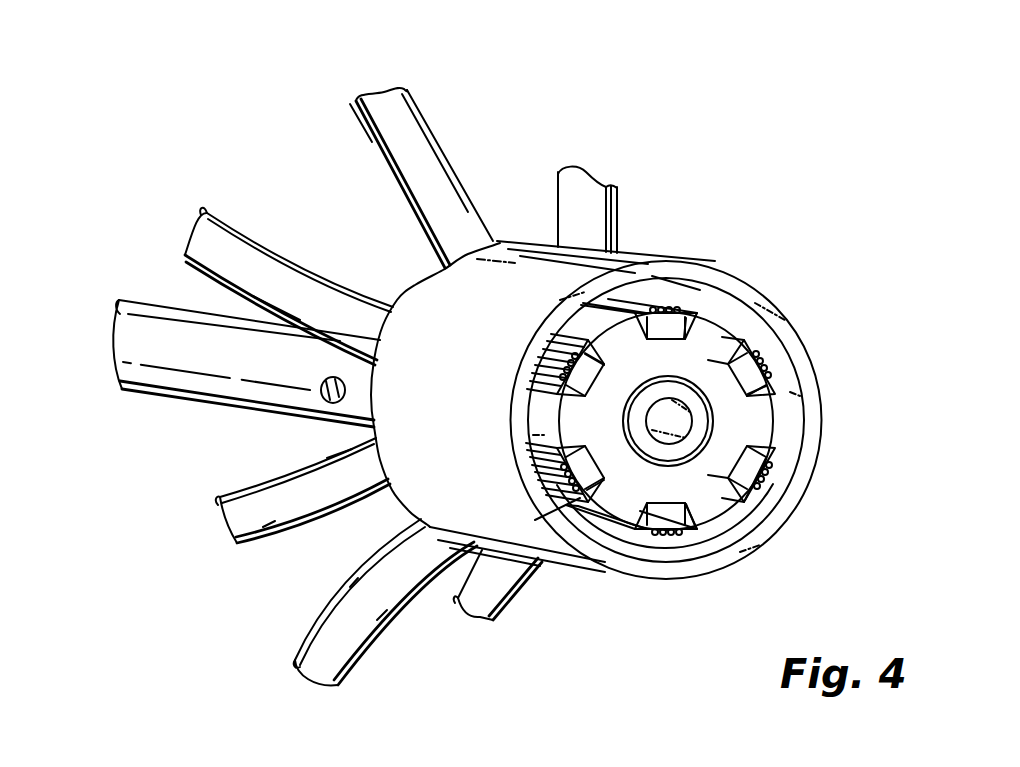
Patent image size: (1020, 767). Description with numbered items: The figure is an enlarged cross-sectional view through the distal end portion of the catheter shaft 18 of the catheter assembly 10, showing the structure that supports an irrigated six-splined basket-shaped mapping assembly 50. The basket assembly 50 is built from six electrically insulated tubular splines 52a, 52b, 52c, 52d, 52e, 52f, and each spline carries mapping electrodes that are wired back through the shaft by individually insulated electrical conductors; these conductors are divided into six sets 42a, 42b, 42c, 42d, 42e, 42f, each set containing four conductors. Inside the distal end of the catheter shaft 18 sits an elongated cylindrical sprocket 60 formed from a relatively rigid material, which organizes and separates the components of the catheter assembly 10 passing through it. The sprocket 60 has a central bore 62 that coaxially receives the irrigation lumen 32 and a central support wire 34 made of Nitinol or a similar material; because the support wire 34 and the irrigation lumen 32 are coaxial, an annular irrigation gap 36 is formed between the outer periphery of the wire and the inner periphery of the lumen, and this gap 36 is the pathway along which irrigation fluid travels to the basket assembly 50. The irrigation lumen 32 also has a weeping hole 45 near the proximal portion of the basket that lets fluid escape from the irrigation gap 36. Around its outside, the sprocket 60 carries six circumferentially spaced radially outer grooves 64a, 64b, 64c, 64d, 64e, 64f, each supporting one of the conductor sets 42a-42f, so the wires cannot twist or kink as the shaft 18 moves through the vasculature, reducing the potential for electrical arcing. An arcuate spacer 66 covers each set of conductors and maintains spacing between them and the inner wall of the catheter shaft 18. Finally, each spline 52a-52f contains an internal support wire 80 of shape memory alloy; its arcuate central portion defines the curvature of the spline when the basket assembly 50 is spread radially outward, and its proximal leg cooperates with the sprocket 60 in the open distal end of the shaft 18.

The catheter assembly 10 is at (713, 150).
The catheter shaft 18 is at (418, 316).
The irrigation lumen 32 is at (165, 375).
The central support wire 34 is at (672, 418).
The annular irrigation gap 36 is at (657, 392).
The conductor set 42a is at (757, 357).
The conductor set 42b is at (657, 305).
The conductor set 42c is at (538, 353).
The conductor set 42d is at (548, 450).
The conductor set 42e is at (645, 537).
The conductor set 42f is at (770, 463).
The weeping hole 45 is at (330, 401).
The six-splined basket-shaped mapping assembly 50 is at (223, 120).
The spline 52a is at (567, 190).
The spline 52b is at (363, 132).
The spline 52c is at (220, 237).
The spline 52d is at (243, 488).
The spline 52e is at (317, 652).
The spline 52f is at (492, 592).
The sprocket 60 is at (722, 312).
The central bore 62 is at (713, 443).
The radially outer groove 64a is at (782, 396).
The radially outer groove 64b is at (692, 309).
The radially outer groove 64c is at (556, 319).
The radially outer groove 64d is at (553, 513).
The radially outer groove 64e is at (689, 519).
The radially outer groove 64f is at (760, 497).
The arcuate spacer 66 is at (636, 264).
The internal support wire 80 is at (762, 366).